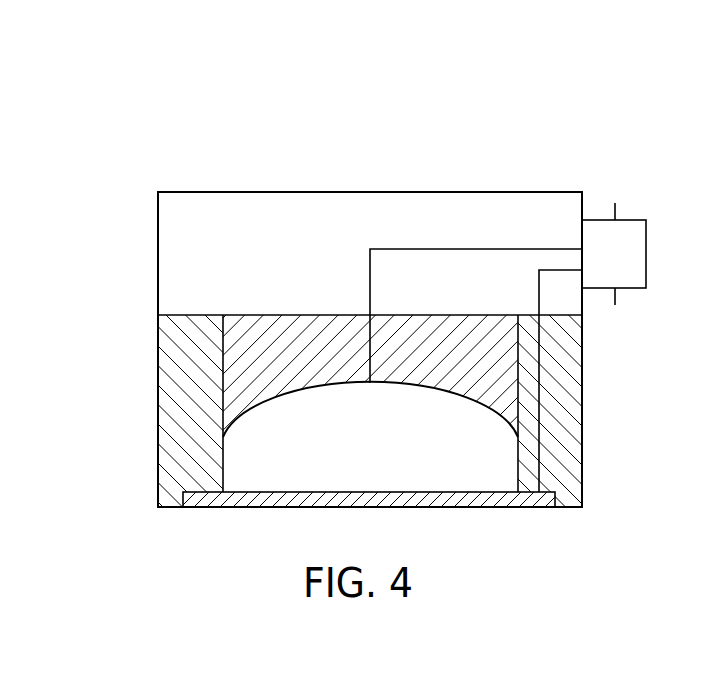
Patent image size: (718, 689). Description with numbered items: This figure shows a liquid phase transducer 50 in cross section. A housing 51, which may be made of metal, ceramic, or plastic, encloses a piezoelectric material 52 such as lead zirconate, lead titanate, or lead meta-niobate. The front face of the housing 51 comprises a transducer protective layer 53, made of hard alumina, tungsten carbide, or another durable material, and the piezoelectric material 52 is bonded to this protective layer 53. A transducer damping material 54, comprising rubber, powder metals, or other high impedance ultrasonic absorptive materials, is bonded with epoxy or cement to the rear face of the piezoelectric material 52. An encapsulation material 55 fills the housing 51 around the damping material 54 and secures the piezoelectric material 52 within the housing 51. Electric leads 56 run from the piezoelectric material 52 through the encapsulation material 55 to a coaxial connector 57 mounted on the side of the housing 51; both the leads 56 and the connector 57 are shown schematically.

The liquid phase transducer 50 is at (507, 116).
The housing 51 is at (198, 190).
The piezoelectric material 52 is at (257, 485).
The transducer protective layer 53 is at (487, 507).
The transducer damping material 54 is at (412, 382).
The encapsulation material 55 is at (163, 342).
The electric leads 56 is at (398, 250).
The coaxial connector 57 is at (641, 238).